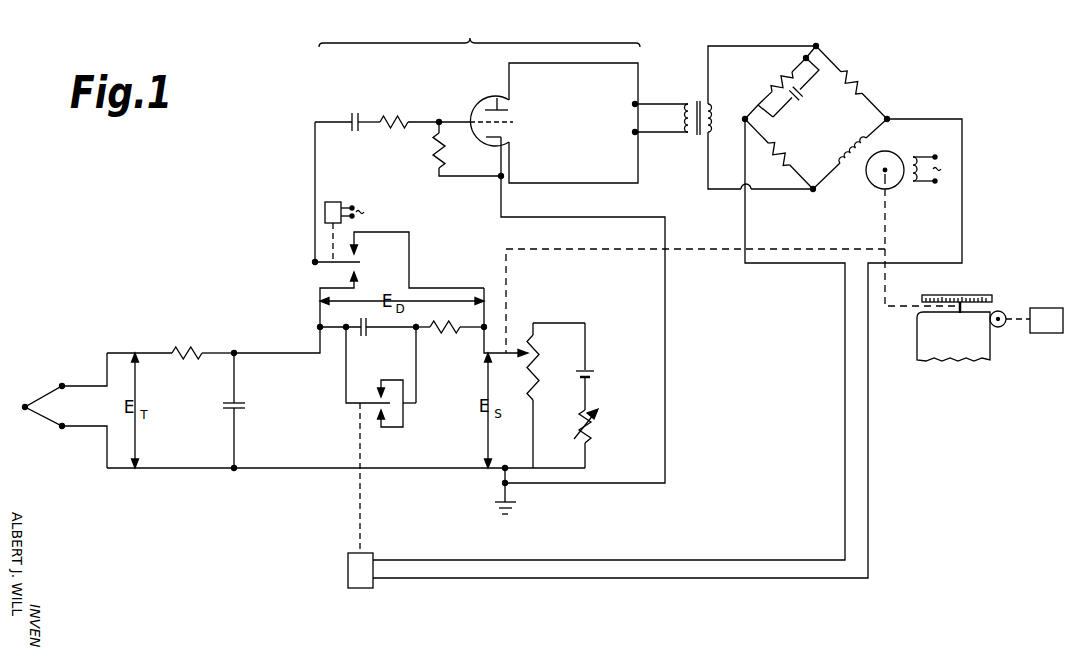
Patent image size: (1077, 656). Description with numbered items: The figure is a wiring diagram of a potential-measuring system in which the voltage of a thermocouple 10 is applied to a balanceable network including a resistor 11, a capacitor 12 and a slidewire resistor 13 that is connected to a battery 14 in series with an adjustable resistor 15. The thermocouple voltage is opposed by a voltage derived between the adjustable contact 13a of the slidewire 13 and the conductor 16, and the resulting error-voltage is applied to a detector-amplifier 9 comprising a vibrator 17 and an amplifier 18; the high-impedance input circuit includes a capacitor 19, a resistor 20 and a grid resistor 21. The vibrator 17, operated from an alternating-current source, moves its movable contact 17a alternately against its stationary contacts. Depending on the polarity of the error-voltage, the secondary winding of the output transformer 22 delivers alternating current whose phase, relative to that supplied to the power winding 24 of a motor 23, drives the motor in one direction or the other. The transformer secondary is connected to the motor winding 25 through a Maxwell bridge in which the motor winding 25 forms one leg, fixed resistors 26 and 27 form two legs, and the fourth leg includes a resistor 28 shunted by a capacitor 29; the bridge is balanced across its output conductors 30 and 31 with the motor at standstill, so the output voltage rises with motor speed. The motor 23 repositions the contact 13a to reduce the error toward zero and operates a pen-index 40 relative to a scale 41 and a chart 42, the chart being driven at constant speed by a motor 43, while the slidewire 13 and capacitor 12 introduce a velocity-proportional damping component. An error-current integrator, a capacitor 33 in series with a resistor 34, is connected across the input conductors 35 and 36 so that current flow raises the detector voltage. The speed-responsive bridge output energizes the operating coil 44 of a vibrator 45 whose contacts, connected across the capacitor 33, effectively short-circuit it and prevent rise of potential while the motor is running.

The detector-amplifier 9 is at (479, 31).
The thermocouple 10 is at (50, 391).
The resistor 11 is at (190, 346).
The capacitor 12 is at (224, 405).
The slidewire resistor 13 is at (540, 384).
The adjustable contact 13a is at (517, 358).
The battery 14 is at (596, 370).
The adjustable resistor 15 is at (598, 436).
The conductor 16 is at (405, 470).
The vibrator 17 is at (328, 237).
The movable contact 17a is at (322, 266).
The amplifier 18 is at (511, 79).
The capacitor 19 is at (352, 112).
The resistor 20 is at (399, 117).
The grid resistor 21 is at (432, 146).
The output transformer 22 is at (697, 102).
The motor 23 is at (880, 153).
The power winding 24 is at (912, 185).
The motor winding 25 is at (848, 167).
The fixed resistor 26 is at (858, 85).
The fixed resistor 27 is at (791, 153).
The resistor 28 is at (776, 80).
The capacitor 29 is at (804, 97).
The output conductor 30 is at (843, 390).
The output conductor 31 is at (872, 423).
The capacitor 33 is at (367, 338).
The resistor 34 is at (455, 337).
The input conductor 35 is at (318, 318).
The input conductor 36 is at (486, 316).
The pen-index 40 is at (962, 310).
The scale 41 is at (961, 295).
The chart 42 is at (993, 359).
The motor 43 is at (1055, 335).
The operating coil 44 is at (348, 578).
The vibrator 45 is at (356, 404).